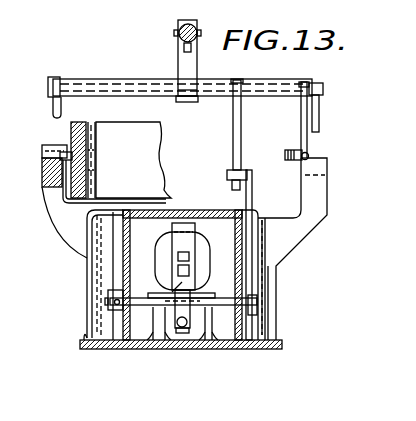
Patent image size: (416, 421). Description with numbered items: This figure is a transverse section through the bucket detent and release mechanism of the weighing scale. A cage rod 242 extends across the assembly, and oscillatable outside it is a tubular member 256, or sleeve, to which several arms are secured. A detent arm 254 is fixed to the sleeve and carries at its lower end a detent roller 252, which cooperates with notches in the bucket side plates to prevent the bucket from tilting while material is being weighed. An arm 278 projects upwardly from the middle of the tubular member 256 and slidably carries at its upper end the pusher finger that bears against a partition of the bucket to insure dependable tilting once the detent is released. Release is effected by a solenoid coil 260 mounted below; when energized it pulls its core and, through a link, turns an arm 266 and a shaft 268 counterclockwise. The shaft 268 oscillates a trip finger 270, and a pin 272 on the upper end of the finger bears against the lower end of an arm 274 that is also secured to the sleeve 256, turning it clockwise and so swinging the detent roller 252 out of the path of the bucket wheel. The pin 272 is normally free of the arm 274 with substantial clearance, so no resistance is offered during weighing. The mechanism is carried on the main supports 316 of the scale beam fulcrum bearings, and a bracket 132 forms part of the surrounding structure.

The mounting bracket 132 is at (43, 187).
The cage rod 242 is at (323, 93).
The detent roller 252 is at (288, 160).
The detent arm 254 is at (308, 137).
The tubular member 256 is at (256, 83).
The solenoid coil 260 is at (160, 253).
The arm 266 is at (167, 298).
The shaft 268 is at (257, 305).
The trip finger 270 is at (300, 243).
The pin 272 is at (227, 174).
The arm 274 is at (241, 136).
The arm 278 is at (178, 63).
The main supports 316 is at (103, 228).